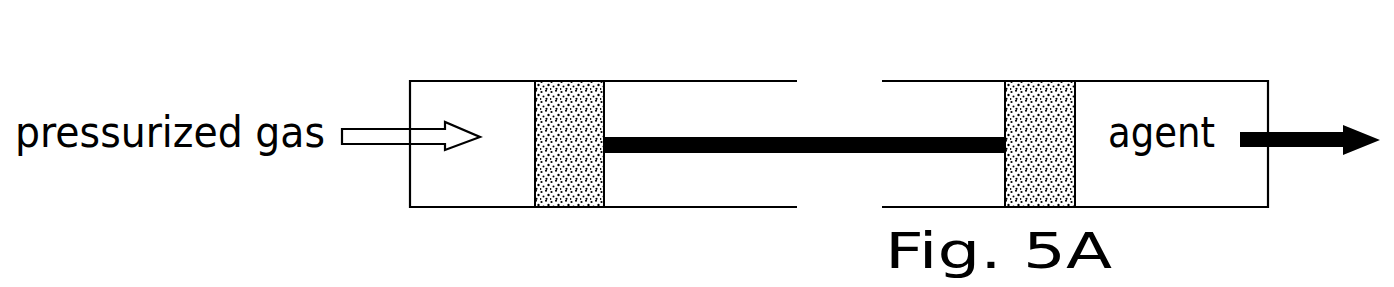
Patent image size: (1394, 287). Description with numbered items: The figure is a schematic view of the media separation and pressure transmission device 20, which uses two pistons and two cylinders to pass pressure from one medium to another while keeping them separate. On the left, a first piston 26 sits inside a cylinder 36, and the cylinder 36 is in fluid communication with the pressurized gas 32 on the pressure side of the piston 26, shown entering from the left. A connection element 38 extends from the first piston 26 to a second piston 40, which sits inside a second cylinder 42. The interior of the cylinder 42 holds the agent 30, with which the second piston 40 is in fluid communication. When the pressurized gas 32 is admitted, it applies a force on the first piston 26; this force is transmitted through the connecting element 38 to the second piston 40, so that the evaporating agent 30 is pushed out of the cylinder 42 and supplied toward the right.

The media separation and pressure transmission device 20 is at (839, 137).
The first piston 26 is at (563, 107).
The agent 30 is at (1295, 132).
The pressurized gas 32 is at (358, 128).
The cylinder 36 is at (618, 208).
The connection element 38 is at (817, 137).
The second piston 40 is at (1035, 103).
The cylinder 42 is at (1140, 82).